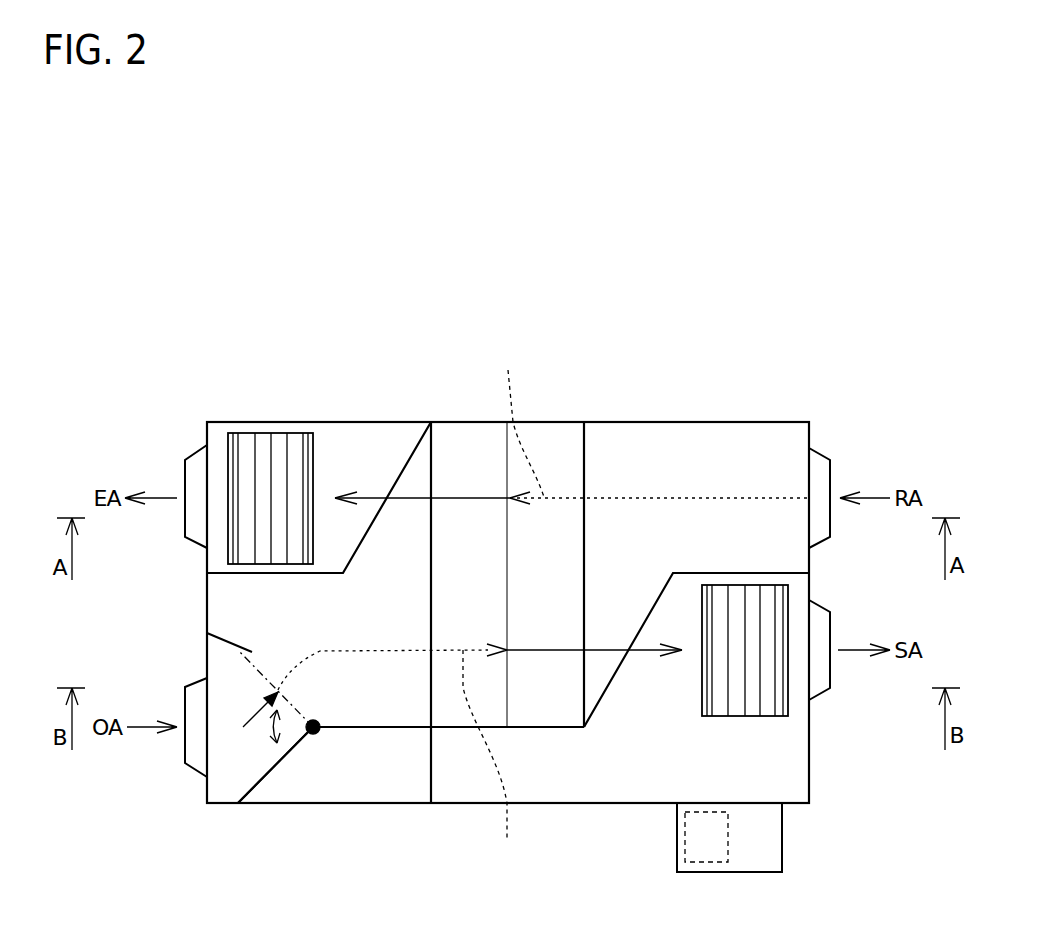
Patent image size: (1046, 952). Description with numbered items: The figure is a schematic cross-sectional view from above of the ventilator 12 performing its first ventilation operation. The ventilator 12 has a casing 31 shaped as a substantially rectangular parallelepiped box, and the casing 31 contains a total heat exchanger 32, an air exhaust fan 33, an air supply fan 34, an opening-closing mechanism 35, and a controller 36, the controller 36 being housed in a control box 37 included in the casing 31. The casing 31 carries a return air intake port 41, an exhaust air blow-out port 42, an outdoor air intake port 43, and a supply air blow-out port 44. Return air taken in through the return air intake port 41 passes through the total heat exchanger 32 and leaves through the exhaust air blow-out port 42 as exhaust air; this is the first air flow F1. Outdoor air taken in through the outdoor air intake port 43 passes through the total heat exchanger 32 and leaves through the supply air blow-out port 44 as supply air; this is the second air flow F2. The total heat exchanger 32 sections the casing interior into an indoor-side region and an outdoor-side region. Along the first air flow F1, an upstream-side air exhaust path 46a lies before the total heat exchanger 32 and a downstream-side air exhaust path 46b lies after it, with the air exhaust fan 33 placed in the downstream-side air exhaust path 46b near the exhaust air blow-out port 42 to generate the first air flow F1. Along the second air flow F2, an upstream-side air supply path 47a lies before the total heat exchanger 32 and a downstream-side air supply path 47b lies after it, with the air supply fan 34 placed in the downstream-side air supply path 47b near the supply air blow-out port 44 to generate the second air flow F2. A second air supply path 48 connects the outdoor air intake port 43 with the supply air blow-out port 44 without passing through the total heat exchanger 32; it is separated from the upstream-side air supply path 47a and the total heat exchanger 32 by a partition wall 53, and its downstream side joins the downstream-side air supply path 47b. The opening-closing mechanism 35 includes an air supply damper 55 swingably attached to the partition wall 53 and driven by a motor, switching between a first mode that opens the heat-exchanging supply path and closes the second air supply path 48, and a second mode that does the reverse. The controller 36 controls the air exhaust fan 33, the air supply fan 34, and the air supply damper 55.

The ventilator 12 is at (755, 358).
The casing 31 is at (691, 422).
The total heat exchanger 32 is at (452, 442).
The air exhaust fan 33 is at (262, 442).
The air supply fan 34 is at (752, 703).
The opening-closing mechanism 35 is at (300, 745).
The controller 36 is at (700, 862).
The control box 37 is at (760, 872).
The return air intake port 41 is at (832, 480).
The exhaust air blow-out port 42 is at (187, 482).
The outdoor air intake port 43 is at (187, 742).
The supply air blow-out port 44 is at (830, 667).
The upstream-side air exhaust path 46a is at (625, 463).
The downstream-side air exhaust path 46b is at (360, 453).
The upstream-side air supply path 47a is at (398, 703).
The downstream-side air supply path 47b is at (620, 703).
The second air supply path 48 is at (448, 748).
The partition wall 53 is at (360, 727).
The air supply damper 55 is at (270, 773).
The first air flow F1 is at (472, 498).
The second air flow F2 is at (552, 650).